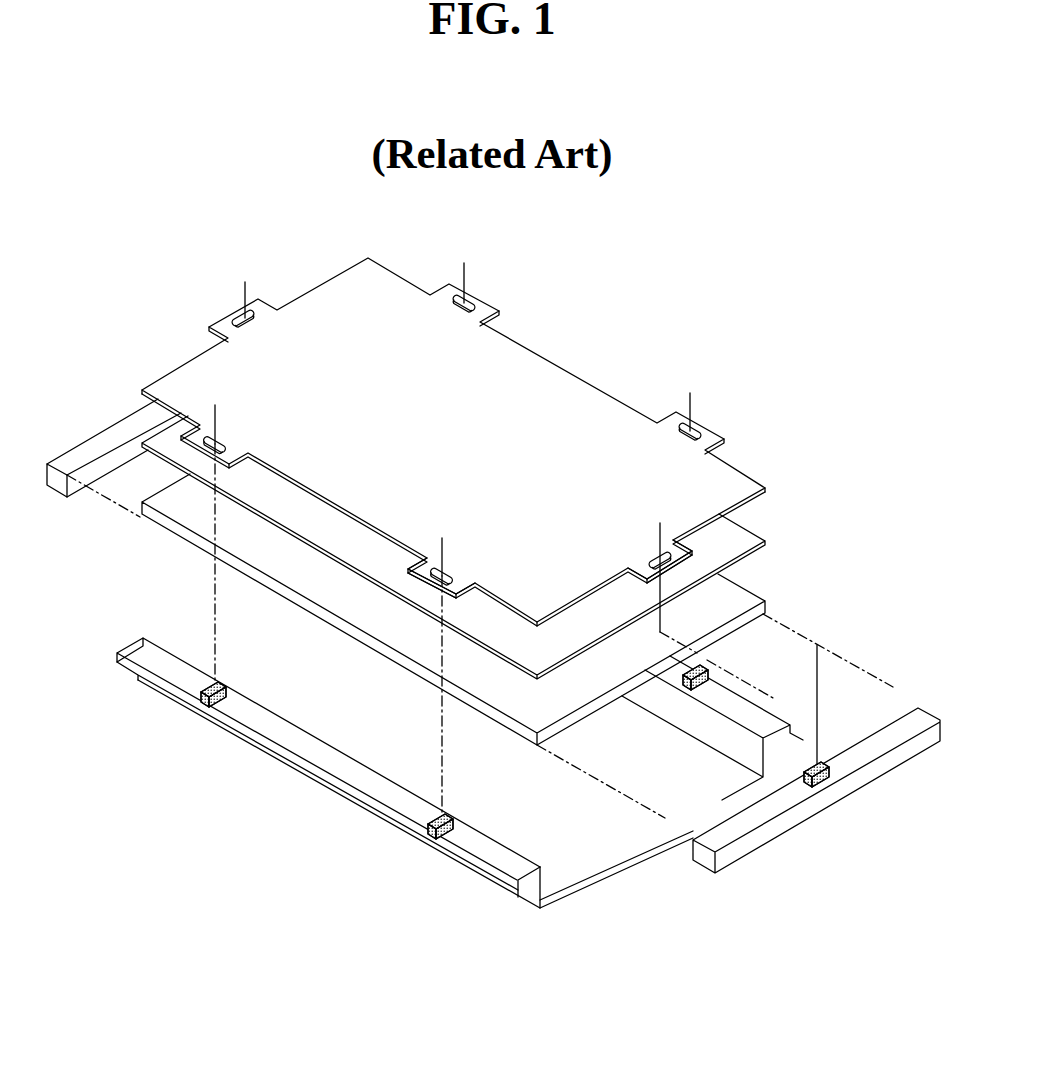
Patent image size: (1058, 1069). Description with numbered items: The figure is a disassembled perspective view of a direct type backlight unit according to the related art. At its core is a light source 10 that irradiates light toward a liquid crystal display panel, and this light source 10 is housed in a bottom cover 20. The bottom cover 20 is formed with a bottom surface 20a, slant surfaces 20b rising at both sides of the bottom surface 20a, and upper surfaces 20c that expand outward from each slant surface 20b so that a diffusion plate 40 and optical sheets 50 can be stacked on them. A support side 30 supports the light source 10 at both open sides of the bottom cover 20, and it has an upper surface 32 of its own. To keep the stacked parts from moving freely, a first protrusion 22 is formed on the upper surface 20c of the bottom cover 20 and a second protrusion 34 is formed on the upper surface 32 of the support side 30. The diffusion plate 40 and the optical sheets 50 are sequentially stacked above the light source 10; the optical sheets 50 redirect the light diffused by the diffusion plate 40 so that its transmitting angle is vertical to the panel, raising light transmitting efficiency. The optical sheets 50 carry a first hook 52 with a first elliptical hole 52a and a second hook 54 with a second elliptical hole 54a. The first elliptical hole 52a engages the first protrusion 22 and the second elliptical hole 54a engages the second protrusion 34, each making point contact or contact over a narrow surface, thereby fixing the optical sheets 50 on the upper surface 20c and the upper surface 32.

The light source 10 is at (745, 598).
The bottom cover 20 is at (405, 819).
The bottom surface 20a is at (558, 902).
The slant surface 20b is at (530, 898).
The upper surface 20c is at (515, 893).
The first protrusion 22 is at (433, 823).
The support side 30 is at (781, 783).
The upper surface 32 is at (753, 817).
The second protrusion 34 is at (823, 778).
The diffusion plate 40 is at (750, 537).
The optical sheets 50 is at (463, 536).
The first hook 52 is at (461, 658).
The first elliptical hole 52a is at (450, 566).
The second hook 54 is at (686, 588).
The second elliptical hole 54a is at (643, 550).